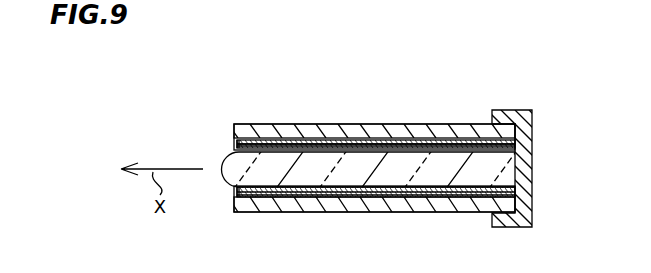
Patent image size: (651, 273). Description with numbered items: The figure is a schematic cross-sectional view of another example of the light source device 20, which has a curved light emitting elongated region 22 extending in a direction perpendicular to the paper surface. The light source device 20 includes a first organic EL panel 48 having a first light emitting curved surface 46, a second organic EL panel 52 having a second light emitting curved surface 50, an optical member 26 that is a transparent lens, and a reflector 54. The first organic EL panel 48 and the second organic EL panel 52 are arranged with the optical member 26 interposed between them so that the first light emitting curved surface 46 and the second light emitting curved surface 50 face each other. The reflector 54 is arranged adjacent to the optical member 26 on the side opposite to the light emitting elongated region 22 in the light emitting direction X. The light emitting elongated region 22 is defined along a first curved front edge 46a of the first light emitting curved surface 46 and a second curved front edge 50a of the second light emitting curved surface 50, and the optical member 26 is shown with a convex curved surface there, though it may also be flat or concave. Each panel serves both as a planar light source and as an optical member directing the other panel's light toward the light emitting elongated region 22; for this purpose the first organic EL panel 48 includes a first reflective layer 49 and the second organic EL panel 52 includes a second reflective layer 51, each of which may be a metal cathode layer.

The light source device 20 is at (244, 99).
The light emitting elongated region 22 is at (226, 156).
The optical member 26 is at (276, 169).
The first light emitting curved surface 46 is at (332, 194).
The first curved front edge 46a is at (233, 194).
The first organic EL panel 48 is at (413, 213).
The first reflective layer 49 is at (380, 197).
The second light emitting curved surface 50 is at (323, 146).
The second curved front edge 50a is at (235, 144).
The second reflective layer 51 is at (374, 141).
The second organic EL panel 52 is at (420, 122).
The reflector 54 is at (522, 158).